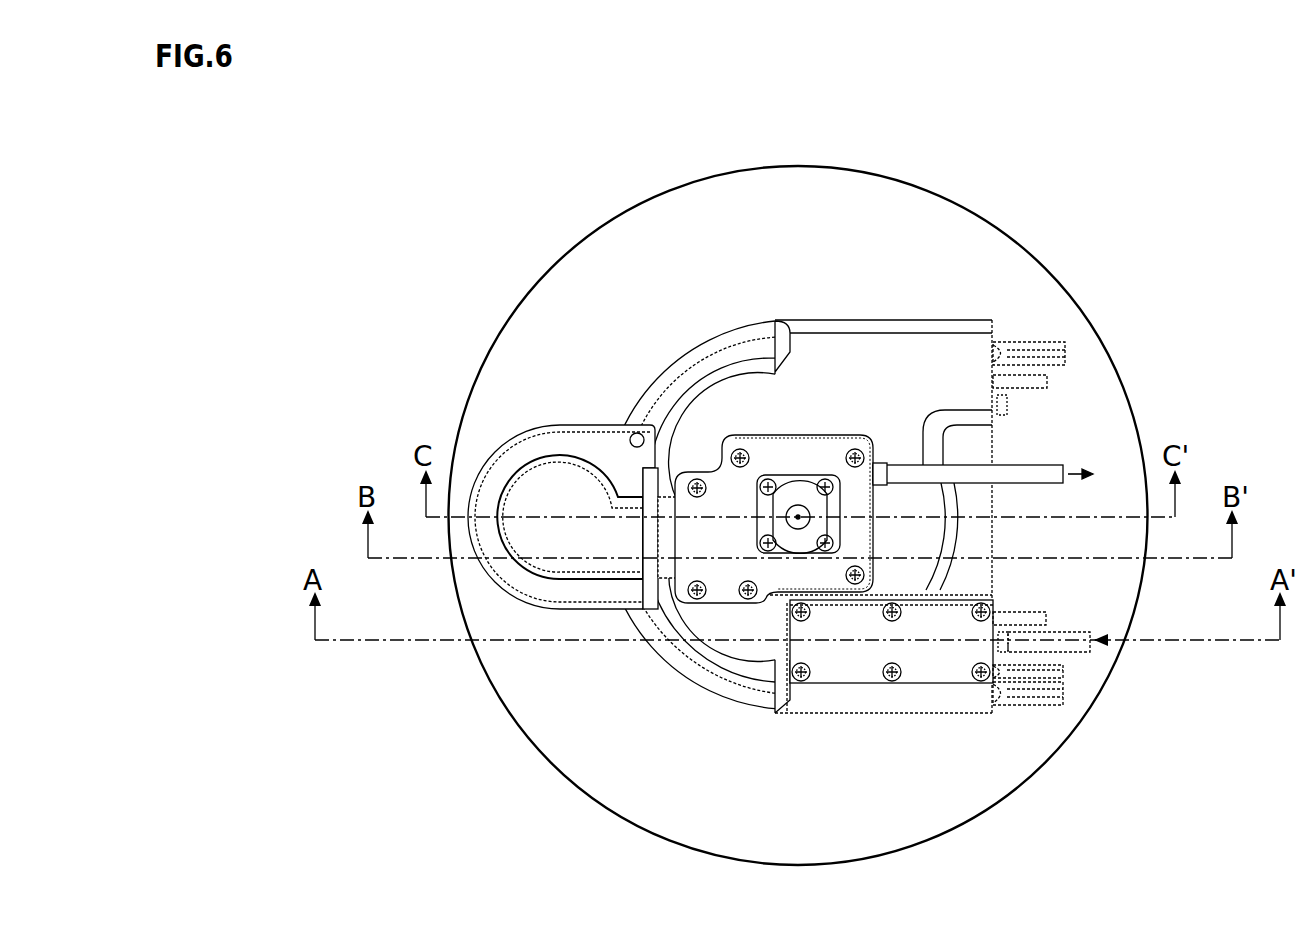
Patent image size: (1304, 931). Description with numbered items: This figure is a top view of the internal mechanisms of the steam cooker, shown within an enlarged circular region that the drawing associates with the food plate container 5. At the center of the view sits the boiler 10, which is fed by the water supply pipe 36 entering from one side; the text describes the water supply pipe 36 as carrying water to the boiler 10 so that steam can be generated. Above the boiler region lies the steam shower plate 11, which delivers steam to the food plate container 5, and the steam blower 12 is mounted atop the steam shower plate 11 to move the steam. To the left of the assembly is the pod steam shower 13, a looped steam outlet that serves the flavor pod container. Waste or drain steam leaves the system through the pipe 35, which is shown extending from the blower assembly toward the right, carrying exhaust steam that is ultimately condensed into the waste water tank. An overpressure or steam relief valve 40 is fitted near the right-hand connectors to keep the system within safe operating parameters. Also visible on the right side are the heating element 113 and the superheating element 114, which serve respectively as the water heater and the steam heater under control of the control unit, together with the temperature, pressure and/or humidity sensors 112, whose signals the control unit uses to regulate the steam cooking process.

The food plate container 5 is at (567, 292).
The boiler 10 is at (850, 660).
The steam shower plate 11 is at (819, 365).
The steam blower 12 is at (810, 455).
The pod steam shower 13 is at (583, 445).
The pipe 35 is at (998, 463).
The water supply pipe 36 is at (1075, 648).
The overpressure or steam relief valve 40 is at (1008, 402).
The temperature, pressure and/or humidity sensors 112 is at (1047, 381).
The heating element 113 is at (1040, 705).
The superheating element 114 is at (1042, 346).